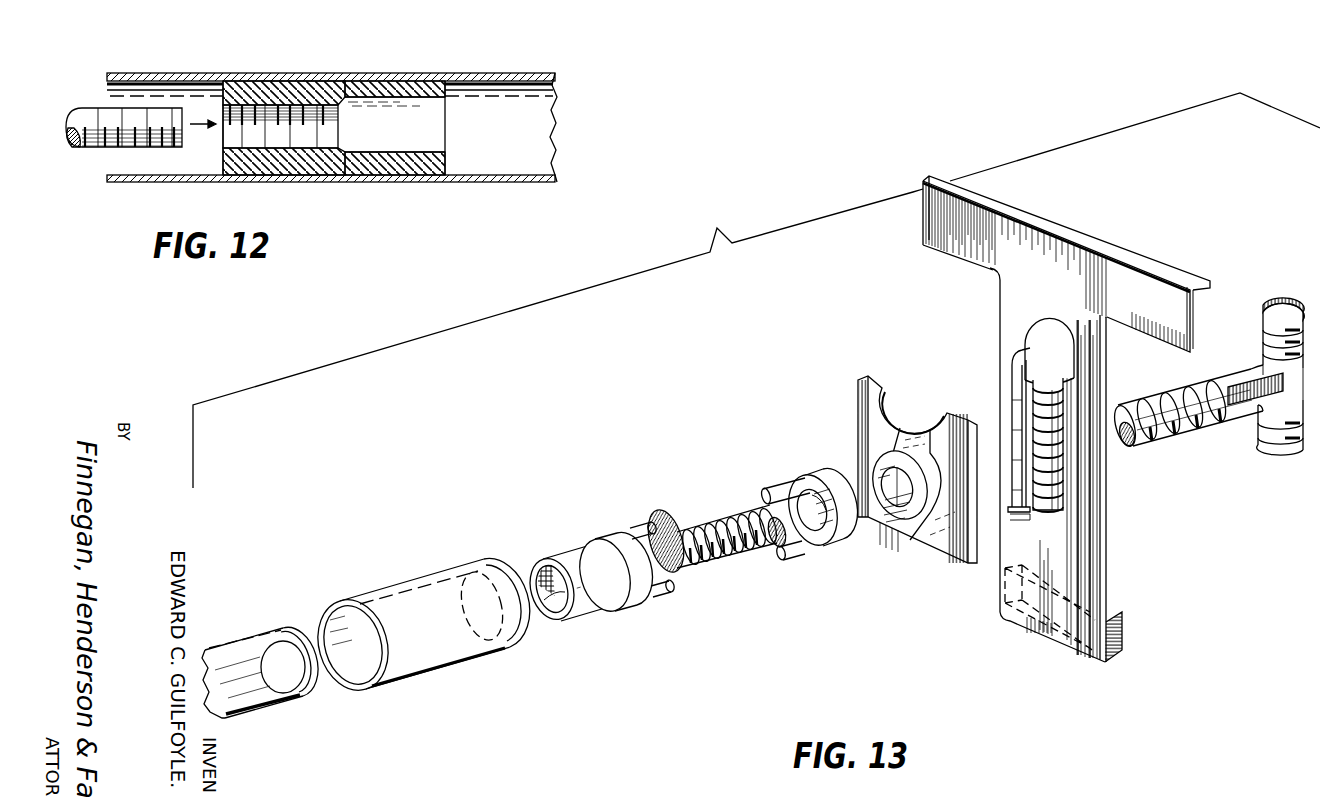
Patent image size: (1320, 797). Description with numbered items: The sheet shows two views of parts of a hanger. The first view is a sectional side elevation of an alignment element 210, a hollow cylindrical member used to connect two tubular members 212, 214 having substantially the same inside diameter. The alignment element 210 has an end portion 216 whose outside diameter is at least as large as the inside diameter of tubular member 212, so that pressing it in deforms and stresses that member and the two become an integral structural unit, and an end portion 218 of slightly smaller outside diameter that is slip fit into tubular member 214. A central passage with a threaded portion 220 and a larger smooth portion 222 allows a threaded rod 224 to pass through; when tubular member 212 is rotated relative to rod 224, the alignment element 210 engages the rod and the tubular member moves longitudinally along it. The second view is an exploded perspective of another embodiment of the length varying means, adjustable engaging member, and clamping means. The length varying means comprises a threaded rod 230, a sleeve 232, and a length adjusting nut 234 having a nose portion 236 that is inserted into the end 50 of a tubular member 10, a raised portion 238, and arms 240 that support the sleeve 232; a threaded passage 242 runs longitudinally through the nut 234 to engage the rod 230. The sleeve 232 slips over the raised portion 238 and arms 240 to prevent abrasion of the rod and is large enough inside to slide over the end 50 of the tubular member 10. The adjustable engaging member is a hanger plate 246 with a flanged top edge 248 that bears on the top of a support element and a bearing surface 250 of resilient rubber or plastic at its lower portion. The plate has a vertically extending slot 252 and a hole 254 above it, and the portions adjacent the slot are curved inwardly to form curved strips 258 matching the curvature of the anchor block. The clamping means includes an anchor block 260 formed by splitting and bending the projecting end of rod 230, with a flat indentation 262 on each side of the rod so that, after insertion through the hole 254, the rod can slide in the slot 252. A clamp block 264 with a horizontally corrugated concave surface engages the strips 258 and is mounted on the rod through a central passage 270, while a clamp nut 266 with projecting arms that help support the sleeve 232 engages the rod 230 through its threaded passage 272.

In FIG. 13, the tubular member 10 is at (268, 724).
In FIG. 13, the end of tubular member 50 is at (293, 630).
In FIG. 12, the alignment element 210 is at (465, 160).
In FIG. 12, the tubular member 212 is at (223, 73).
In FIG. 12, the tubular member 214 is at (417, 70).
In FIG. 12, the end portion 216 is at (292, 157).
In FIG. 12, the end portion 218 is at (393, 162).
In FIG. 12, the threaded portion 220 is at (233, 135).
In FIG. 12, the smooth portion 222 is at (433, 129).
In FIG. 12, the threaded rod 224 is at (93, 132).
In FIG. 13, the threaded rod 230 is at (718, 504).
In FIG. 13, the sleeve 232 is at (457, 640).
In FIG. 13, the length adjusting nut 234 is at (603, 616).
In FIG. 13, the nose portion 236 is at (553, 557).
In FIG. 13, the raised portion 238 is at (608, 535).
In FIG. 13, the arms 240 is at (645, 522).
In FIG. 13, the threaded passage 242 is at (553, 602).
In FIG. 13, the hanger plate 246 is at (990, 353).
In FIG. 13, the flanged top edge 248 is at (1210, 278).
In FIG. 13, the bearing surface 250 is at (1122, 630).
In FIG. 13, the slot 252 is at (1028, 503).
In FIG. 13, the hole 254 is at (1040, 333).
In FIG. 13, the curved strips 258 is at (1040, 408).
In FIG. 13, the anchor block 260 is at (1260, 455).
In FIG. 13, the flat indentation 262 is at (1257, 380).
In FIG. 13, the clamp block 264 is at (878, 372).
In FIG. 13, the clamp nut 266 is at (790, 482).
In FIG. 13, the central passage 270 is at (910, 498).
In FIG. 13, the threaded passage 272 is at (825, 548).